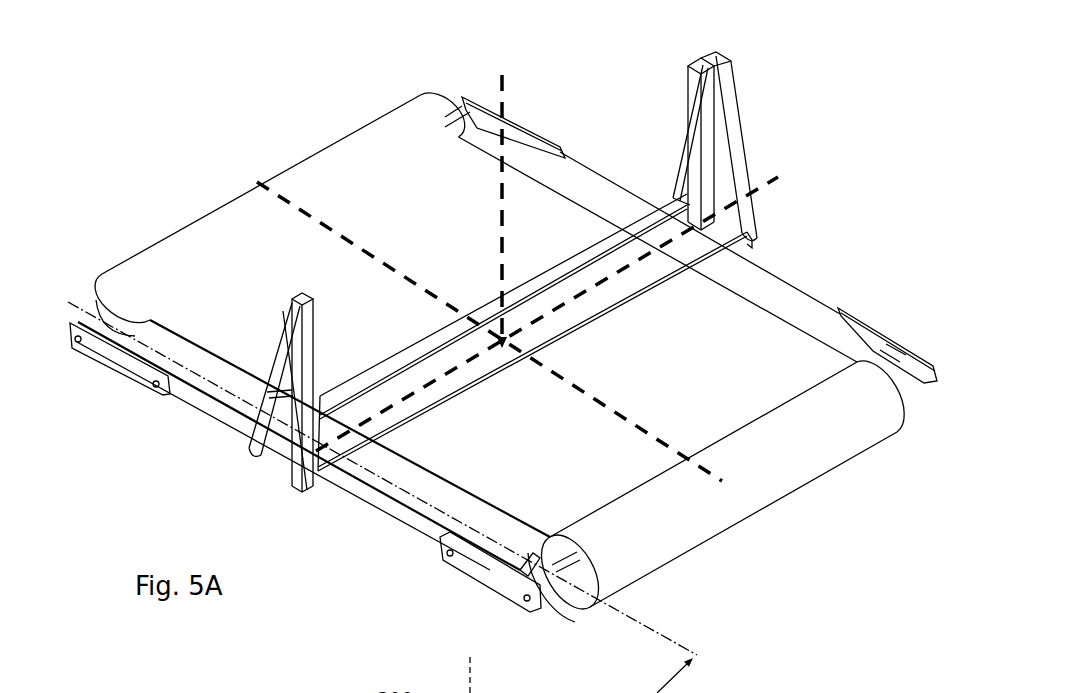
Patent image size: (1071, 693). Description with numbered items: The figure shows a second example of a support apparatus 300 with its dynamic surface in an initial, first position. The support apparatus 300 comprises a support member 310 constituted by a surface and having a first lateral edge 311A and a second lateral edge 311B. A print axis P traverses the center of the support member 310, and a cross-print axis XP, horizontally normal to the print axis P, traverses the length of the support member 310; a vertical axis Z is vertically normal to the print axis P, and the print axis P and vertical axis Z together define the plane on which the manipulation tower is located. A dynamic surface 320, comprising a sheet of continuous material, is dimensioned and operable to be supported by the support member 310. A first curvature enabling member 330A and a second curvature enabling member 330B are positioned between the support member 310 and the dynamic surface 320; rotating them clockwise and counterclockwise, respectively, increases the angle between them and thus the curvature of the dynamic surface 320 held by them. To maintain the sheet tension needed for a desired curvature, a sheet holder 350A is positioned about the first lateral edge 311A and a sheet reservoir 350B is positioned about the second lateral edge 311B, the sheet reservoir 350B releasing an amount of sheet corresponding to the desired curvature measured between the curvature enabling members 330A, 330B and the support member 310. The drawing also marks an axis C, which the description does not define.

The support apparatus 300 is at (608, 76).
The support member 310 is at (172, 347).
The first lateral edge 311A is at (80, 340).
The second lateral edge 311B is at (538, 595).
The dynamic surface 320 is at (470, 450).
The first curvature enabling member 330A is at (663, 204).
The second curvature enabling member 330B is at (340, 470).
The sheet holder 350A is at (348, 141).
The sheet reservoir 350B is at (810, 475).
The cross-print axis XP is at (268, 183).
The vertical axis Z is at (512, 80).
The print axis P is at (768, 180).
The conveyance axis C is at (68, 311).